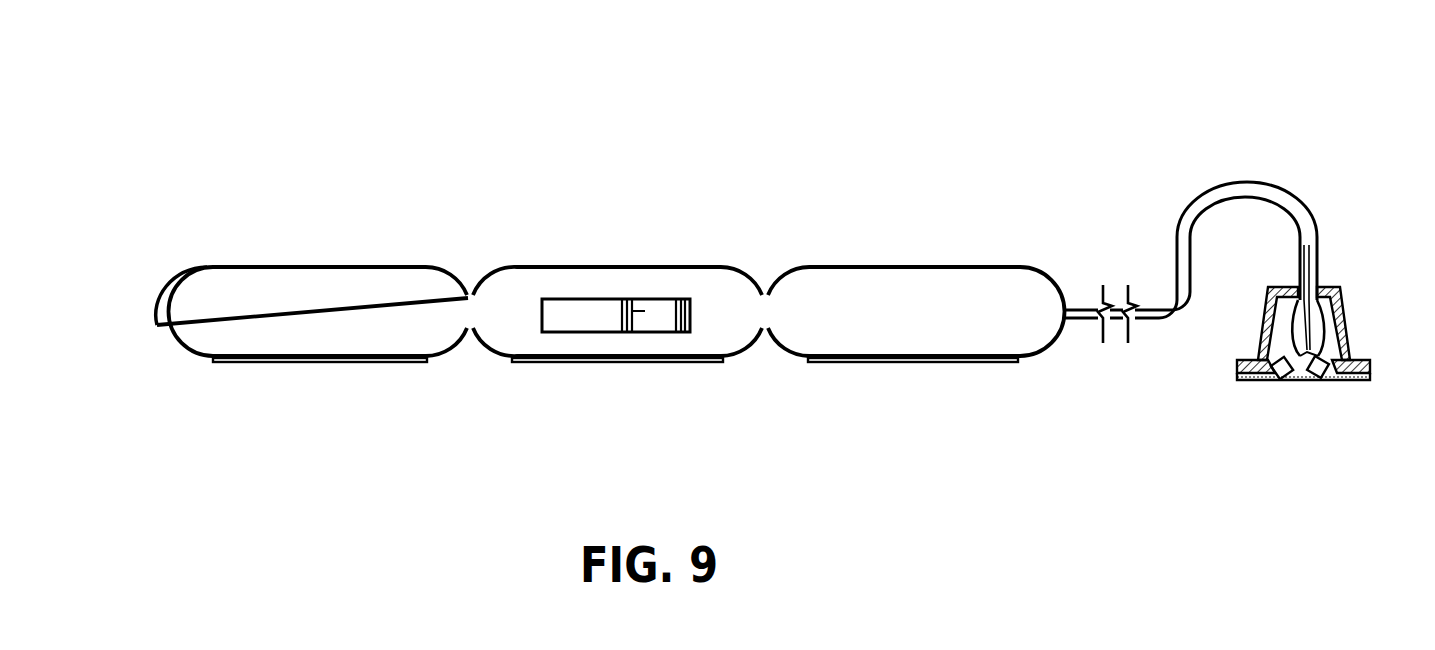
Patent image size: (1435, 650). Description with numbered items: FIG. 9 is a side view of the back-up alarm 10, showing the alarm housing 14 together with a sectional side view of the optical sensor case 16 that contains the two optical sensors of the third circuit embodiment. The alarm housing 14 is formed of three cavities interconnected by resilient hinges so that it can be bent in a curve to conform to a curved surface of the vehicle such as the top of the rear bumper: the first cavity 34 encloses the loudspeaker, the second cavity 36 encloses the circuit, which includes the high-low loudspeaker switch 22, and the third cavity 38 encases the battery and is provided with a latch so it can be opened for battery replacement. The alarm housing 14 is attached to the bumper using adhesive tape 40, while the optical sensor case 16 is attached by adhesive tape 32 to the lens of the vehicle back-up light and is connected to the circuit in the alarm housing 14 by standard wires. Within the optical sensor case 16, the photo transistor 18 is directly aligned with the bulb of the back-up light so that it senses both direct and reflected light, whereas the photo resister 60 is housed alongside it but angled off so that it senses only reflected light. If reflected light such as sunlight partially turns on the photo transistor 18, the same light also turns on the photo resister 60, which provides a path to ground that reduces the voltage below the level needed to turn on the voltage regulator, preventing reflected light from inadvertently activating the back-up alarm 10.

The back-up alarm 10 is at (226, 165).
The alarm housing 14 is at (645, 178).
The optical sensor case 16 is at (1330, 292).
The photo transistor 18 is at (1315, 380).
The high-low loudspeaker switch 22 is at (617, 303).
The adhesive tape 32 is at (1338, 380).
The first cavity 34 is at (937, 317).
The second cavity 36 is at (601, 342).
The third cavity 38 is at (210, 355).
The adhesive tape 40 is at (532, 363).
The photo resister 60 is at (1281, 380).